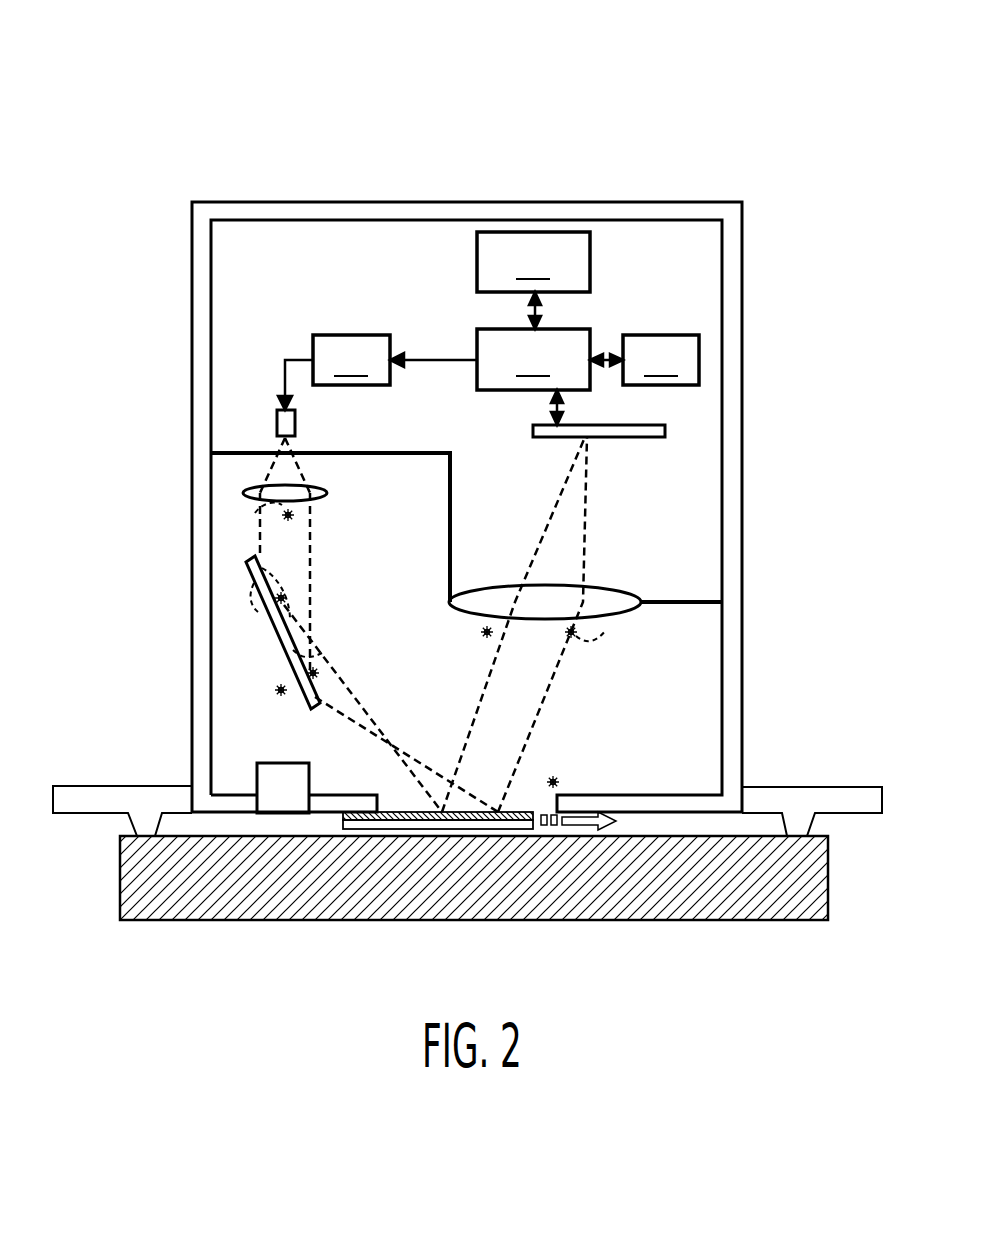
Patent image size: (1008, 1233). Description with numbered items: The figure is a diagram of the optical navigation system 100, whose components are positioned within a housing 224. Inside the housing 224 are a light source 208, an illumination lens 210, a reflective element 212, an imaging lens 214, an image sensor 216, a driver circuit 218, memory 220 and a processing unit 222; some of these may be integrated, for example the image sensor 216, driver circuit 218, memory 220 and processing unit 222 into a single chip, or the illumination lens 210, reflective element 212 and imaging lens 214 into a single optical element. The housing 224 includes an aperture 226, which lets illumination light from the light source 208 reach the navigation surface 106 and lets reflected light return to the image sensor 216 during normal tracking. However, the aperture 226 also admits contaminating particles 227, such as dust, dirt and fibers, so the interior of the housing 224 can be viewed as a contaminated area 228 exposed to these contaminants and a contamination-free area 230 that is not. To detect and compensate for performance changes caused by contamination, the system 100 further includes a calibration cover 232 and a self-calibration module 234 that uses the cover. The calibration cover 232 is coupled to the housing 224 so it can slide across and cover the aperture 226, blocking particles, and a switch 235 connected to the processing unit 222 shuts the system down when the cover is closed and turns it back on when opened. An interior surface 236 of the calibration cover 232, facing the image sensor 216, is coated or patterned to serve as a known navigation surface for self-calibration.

The optical navigation system 100 is at (757, 103).
The navigation surface 106 is at (753, 834).
The light source 208 is at (277, 423).
The illumination lens 210 is at (243, 493).
The reflective element 212 is at (277, 627).
The imaging lens 214 is at (626, 615).
The image sensor 216 is at (665, 431).
The driver circuit 218 is at (323, 343).
The memory 220 is at (699, 357).
The processing unit 222 is at (574, 338).
The housing 224 is at (742, 222).
The aperture 226 is at (540, 790).
The contaminating particles 227 is at (294, 516).
The contaminated area 228 is at (397, 588).
The contamination-free area 230 is at (504, 501).
The calibration cover 232 is at (337, 826).
The self-calibration module 234 is at (571, 242).
The switch 235 is at (257, 772).
The interior surface 236 is at (393, 810).